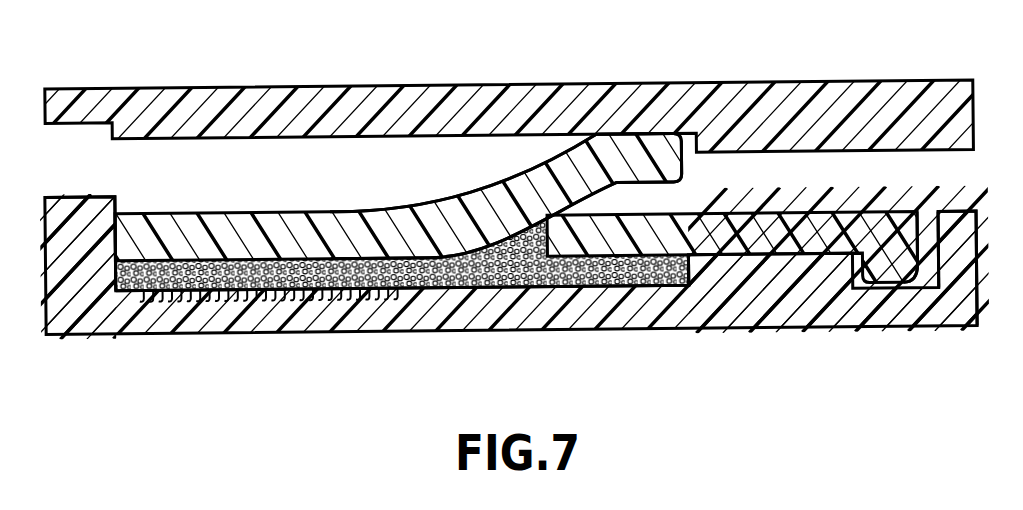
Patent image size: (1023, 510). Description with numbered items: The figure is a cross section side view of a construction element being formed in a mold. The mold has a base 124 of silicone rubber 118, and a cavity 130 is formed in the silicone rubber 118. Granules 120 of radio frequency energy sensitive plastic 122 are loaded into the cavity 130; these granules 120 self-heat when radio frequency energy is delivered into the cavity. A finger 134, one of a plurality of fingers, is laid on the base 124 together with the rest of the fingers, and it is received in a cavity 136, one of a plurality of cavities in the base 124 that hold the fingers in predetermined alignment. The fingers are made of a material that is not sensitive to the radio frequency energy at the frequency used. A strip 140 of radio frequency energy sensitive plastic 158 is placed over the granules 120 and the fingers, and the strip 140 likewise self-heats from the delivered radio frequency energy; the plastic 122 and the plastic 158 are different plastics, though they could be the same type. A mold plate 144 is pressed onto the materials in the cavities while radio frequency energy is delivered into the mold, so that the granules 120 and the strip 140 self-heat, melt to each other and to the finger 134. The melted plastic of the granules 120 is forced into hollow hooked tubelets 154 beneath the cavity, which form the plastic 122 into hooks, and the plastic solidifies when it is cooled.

The silicone rubber 118 is at (480, 308).
The granules 120 is at (655, 291).
The radio frequency energy sensitive plastic 122 is at (585, 293).
The base 124 is at (838, 310).
The cavity 130 is at (135, 298).
The finger 134 is at (855, 238).
The cavity 136 is at (927, 247).
The strip 140 is at (155, 230).
The mold plate 144 is at (893, 97).
The hollow hooked tubelets 154 is at (278, 298).
The radio frequency energy sensitive plastic 158 is at (363, 224).